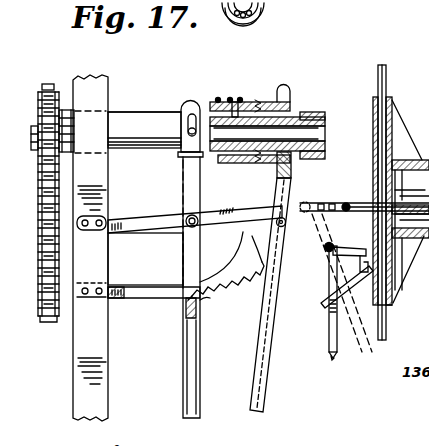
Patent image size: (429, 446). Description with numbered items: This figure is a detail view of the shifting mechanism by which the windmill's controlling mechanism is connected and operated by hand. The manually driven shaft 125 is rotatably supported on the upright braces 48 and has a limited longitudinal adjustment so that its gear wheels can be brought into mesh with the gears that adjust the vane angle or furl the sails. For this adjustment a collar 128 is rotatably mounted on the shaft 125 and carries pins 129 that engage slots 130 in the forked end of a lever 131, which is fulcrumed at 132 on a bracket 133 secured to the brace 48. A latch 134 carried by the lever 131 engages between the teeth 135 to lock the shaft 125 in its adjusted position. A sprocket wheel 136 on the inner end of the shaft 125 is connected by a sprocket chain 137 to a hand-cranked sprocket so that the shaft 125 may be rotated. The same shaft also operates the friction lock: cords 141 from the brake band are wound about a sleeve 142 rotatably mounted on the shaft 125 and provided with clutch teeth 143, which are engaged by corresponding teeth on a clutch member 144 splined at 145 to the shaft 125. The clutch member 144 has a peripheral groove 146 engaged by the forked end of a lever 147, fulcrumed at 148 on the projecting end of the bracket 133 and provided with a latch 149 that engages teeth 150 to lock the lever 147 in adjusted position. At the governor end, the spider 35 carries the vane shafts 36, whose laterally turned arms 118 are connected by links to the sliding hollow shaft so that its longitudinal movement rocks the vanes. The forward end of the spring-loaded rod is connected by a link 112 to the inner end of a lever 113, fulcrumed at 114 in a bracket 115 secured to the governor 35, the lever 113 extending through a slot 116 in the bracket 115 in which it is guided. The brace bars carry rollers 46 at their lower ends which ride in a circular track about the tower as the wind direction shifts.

The spider 35 is at (373, 139).
The shafts 36 is at (381, 66).
The rollers 46 is at (420, 401).
The upright braces 48 is at (87, 77).
The link 112 is at (334, 208).
The lever 113 is at (339, 356).
The fulcrum 114 is at (326, 255).
The bracket 115 is at (362, 246).
The slot 116 is at (322, 308).
The laterally turned arms 118 is at (385, 193).
The shaft 125 is at (118, 110).
The collar 128 is at (178, 110).
The pins 129 is at (188, 138).
The slots 130 is at (193, 112).
The lever 131 is at (190, 185).
The fulcrum 132 is at (186, 218).
The bracket 133 is at (170, 234).
The latch 134 is at (180, 296).
The teeth 135 is at (240, 294).
The sprocket wheel 136 is at (48, 88).
The sprocket chain 137 is at (50, 318).
The cords 141 is at (237, 100).
The sleeve 142 is at (243, 24).
The clutch teeth 143 is at (246, 102).
The clutch member 144 is at (288, 102).
The spline 145 is at (322, 118).
The peripheral groove 146 is at (290, 168).
The lever 147 is at (277, 198).
The fulcrum 148 is at (262, 210).
The latch 149 is at (254, 276).
The teeth 150 is at (318, 306).